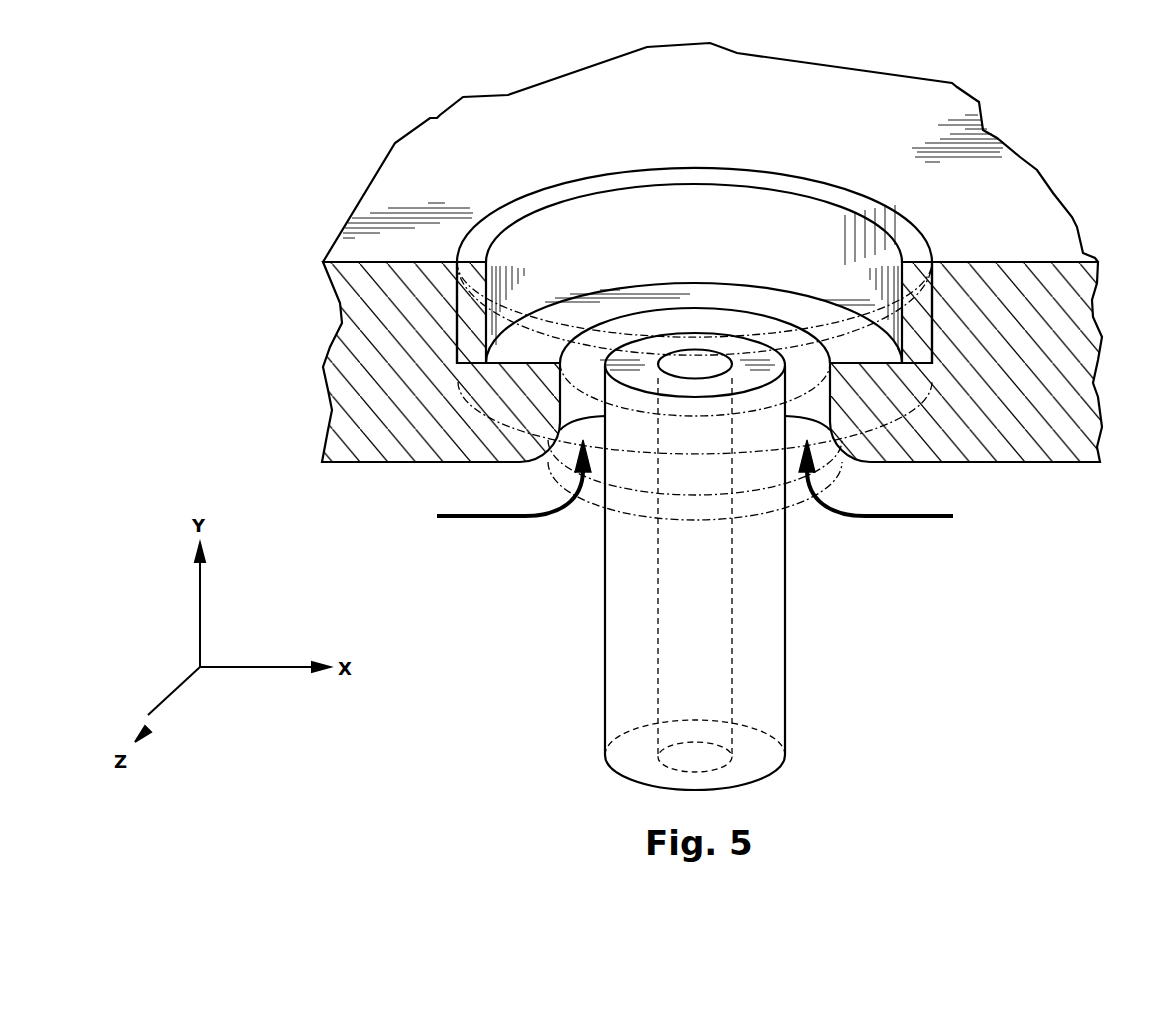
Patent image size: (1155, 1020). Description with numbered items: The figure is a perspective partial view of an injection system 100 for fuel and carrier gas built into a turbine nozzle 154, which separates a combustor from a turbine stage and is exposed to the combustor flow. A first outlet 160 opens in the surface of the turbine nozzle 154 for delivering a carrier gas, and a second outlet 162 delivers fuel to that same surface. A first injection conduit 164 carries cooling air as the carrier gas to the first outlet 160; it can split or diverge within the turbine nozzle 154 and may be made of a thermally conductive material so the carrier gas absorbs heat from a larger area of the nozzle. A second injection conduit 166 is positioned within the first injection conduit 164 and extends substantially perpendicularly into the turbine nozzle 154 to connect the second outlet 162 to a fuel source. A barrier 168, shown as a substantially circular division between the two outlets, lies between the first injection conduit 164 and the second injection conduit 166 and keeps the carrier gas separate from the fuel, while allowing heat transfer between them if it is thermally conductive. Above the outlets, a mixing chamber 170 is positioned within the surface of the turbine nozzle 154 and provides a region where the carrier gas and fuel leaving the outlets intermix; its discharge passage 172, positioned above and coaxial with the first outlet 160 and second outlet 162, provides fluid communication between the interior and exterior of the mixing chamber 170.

The injection system 100 is at (292, 237).
The turbine nozzle 154 is at (397, 173).
The first outlet 160 is at (585, 363).
The second outlet 162 is at (693, 360).
The first injection conduit 164 is at (517, 518).
The second injection conduit 166 is at (673, 708).
The barrier 168 is at (740, 348).
The mixing chamber 170 is at (832, 193).
The discharge passage 172 is at (703, 193).